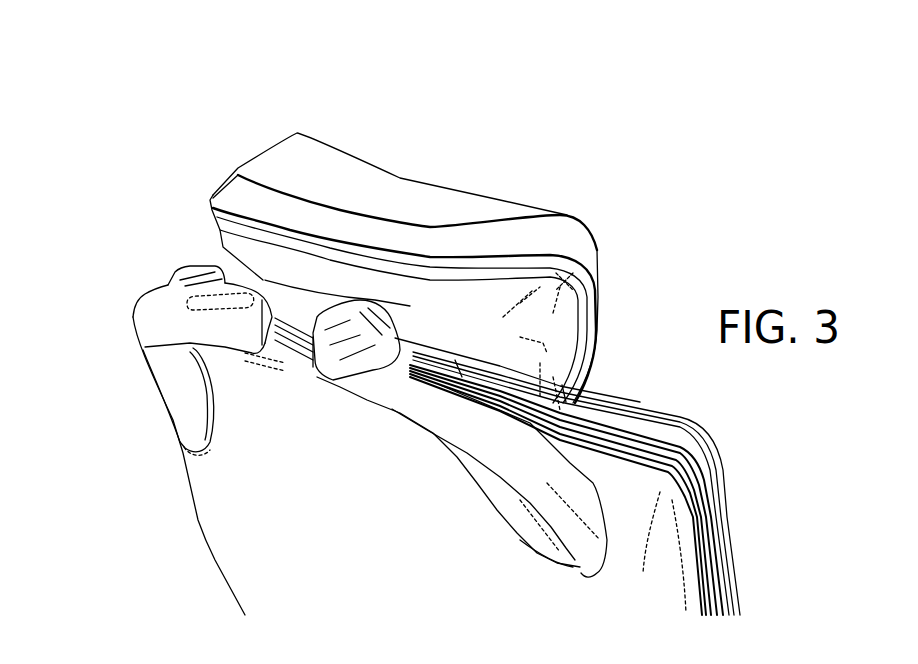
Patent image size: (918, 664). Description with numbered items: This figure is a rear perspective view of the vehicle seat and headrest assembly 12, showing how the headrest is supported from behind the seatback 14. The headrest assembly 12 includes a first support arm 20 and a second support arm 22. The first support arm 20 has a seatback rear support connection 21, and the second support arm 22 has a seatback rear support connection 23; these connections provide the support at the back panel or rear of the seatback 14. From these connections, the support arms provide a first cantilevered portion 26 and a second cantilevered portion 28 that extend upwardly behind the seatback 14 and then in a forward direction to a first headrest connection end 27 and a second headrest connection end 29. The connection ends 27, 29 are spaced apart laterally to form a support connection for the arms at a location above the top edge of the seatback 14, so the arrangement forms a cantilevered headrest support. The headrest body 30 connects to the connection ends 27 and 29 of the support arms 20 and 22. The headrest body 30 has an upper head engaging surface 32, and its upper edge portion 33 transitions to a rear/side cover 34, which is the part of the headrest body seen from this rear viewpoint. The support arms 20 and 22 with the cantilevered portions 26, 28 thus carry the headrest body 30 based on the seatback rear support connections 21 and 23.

The headrest assembly 12 is at (541, 114).
The seatback 14 is at (727, 517).
The first support arm 20 is at (500, 514).
The seatback rear support connection 21 is at (568, 570).
The second support arm 22 is at (195, 387).
The seatback rear support connection 23 is at (206, 448).
The first cantilevered portion 26 is at (423, 385).
The first headrest connection end 27 is at (375, 315).
The second cantilevered portion 28 is at (180, 322).
The second headrest connection end 29 is at (232, 278).
The headrest body 30 is at (240, 146).
The upper head engaging surface 32 is at (386, 200).
The upper edge portion 33 is at (557, 237).
The rear/side cover 34 is at (517, 327).